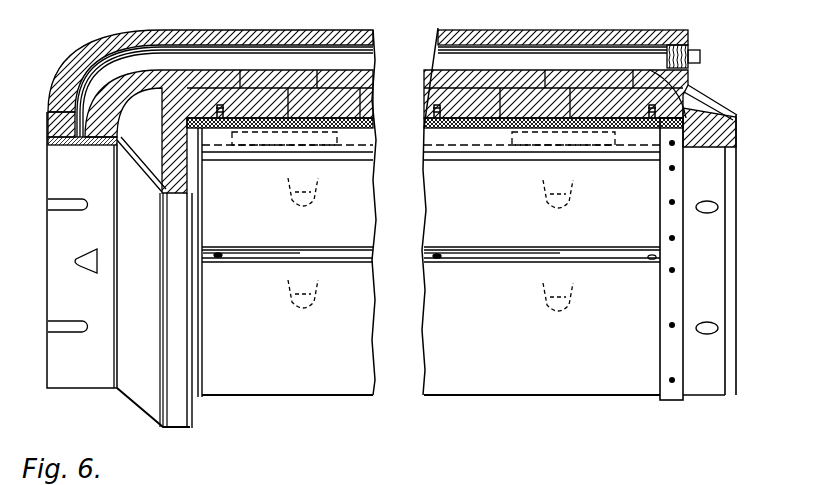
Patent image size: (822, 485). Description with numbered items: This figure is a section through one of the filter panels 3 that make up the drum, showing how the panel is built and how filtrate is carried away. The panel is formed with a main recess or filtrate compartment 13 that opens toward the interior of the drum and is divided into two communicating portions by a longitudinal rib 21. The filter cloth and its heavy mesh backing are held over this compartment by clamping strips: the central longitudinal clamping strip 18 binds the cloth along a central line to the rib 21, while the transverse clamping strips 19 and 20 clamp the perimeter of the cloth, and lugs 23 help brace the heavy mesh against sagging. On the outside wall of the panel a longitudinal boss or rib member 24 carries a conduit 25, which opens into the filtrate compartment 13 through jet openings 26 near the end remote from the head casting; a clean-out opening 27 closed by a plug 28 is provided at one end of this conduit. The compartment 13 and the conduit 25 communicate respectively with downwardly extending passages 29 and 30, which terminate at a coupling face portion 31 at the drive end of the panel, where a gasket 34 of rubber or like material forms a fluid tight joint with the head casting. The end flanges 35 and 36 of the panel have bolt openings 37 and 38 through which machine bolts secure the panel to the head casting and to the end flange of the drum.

The filter panel 3 is at (571, 40).
The filtrate compartment 13 is at (267, 88).
The longitudinal clamping strip 18 is at (424, 125).
The transverse clamping strip 19 is at (202, 160).
The transverse clamping strip 20 is at (683, 150).
The longitudinal rib 21 is at (528, 63).
The lug 23 is at (300, 310).
The longitudinal boss or rib member 24 is at (373, 33).
The conduit 25 is at (360, 63).
The jet opening 26 is at (458, 60).
The clean-out opening 27 is at (688, 32).
The plug 28 is at (700, 54).
The downwardly extending passage 29 is at (145, 108).
The downwardly extending passage 30 is at (90, 123).
The coupling face portion 31 is at (170, 196).
The gasket 34 is at (52, 143).
The end flange 35 is at (47, 123).
The end flange 36 is at (736, 113).
The bolt opening 37 is at (48, 205).
The bolt opening 38 is at (737, 108).